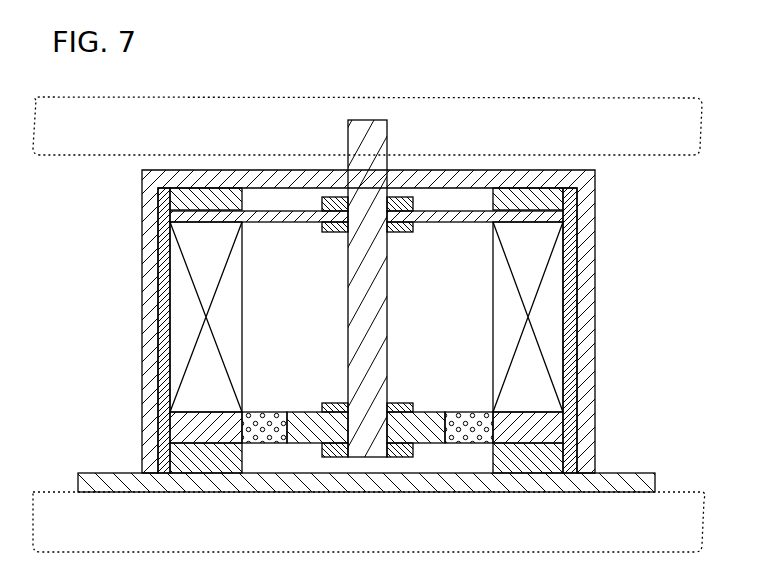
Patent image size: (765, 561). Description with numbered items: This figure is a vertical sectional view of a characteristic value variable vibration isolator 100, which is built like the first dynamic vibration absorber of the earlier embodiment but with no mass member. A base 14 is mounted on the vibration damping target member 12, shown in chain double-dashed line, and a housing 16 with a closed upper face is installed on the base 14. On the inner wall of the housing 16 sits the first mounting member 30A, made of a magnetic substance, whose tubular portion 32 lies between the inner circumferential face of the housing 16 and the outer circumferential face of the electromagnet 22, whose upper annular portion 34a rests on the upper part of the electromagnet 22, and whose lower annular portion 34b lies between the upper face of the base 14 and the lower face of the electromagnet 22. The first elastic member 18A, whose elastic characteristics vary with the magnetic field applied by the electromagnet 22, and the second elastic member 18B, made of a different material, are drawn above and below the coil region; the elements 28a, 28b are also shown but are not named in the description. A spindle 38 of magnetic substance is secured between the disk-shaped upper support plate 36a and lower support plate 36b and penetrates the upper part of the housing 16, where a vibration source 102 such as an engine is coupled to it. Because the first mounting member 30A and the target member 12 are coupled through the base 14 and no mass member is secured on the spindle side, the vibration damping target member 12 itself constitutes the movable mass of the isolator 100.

The vibration isolator 100 is at (182, 67).
The vibration source 102 is at (578, 97).
The vibration damping target member 12 is at (57, 492).
The base 14 is at (628, 473).
The housing 16 is at (222, 170).
The first elastic member 18A is at (469, 455).
The second elastic member 18B is at (463, 208).
The electromagnet 22 is at (555, 342).
The upper magnet portion 28a is at (523, 204).
The upper magnet portion 28b is at (399, 197).
The first mounting member 30A is at (543, 197).
The tubular portion 32 is at (568, 267).
The upper annular portion 34a is at (515, 197).
The lower annular portion 34b is at (525, 468).
The upper support plate 36a is at (400, 232).
The lower support plate 36b is at (397, 457).
The spindle 38 is at (364, 122).